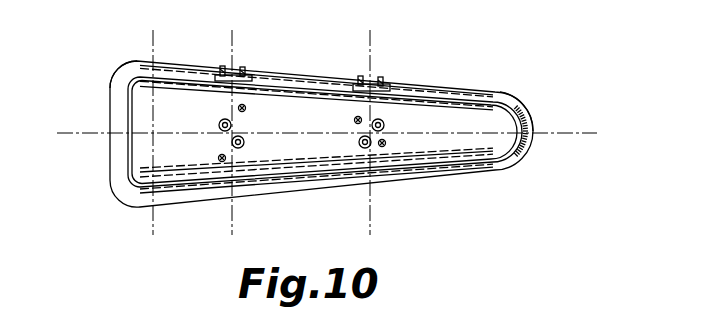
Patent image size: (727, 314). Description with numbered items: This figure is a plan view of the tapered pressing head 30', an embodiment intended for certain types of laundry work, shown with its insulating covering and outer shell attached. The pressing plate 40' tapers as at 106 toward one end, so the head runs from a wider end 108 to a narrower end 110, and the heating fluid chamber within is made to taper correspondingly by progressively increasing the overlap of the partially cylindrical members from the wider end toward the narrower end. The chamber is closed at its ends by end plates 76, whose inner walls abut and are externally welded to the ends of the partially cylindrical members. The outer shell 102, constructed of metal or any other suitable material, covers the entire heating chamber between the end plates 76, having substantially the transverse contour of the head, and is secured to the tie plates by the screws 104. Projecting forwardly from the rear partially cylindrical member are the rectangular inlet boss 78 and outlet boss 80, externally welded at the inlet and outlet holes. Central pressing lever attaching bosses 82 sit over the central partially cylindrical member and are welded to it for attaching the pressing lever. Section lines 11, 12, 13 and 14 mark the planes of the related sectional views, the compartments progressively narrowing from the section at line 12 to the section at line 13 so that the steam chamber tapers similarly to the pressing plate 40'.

The section line 11- 11 is at (65, 147).
The section line 12- 12 is at (245, 42).
The section line 13- 13 is at (378, 42).
The section line 14- 14 is at (167, 42).
The tapered pressing head 30' is at (532, 88).
The pressing plate 40' is at (544, 137).
The end plates 76 is at (132, 155).
The inlet boss 78 is at (385, 90).
The outlet boss 80 is at (242, 82).
The central pressing lever attaching bosses 82 is at (243, 136).
The outer shell 102 is at (143, 168).
The screws 104 is at (246, 108).
The taper 106 is at (450, 87).
The wider end 108 is at (123, 62).
The narrower end 110 is at (492, 92).